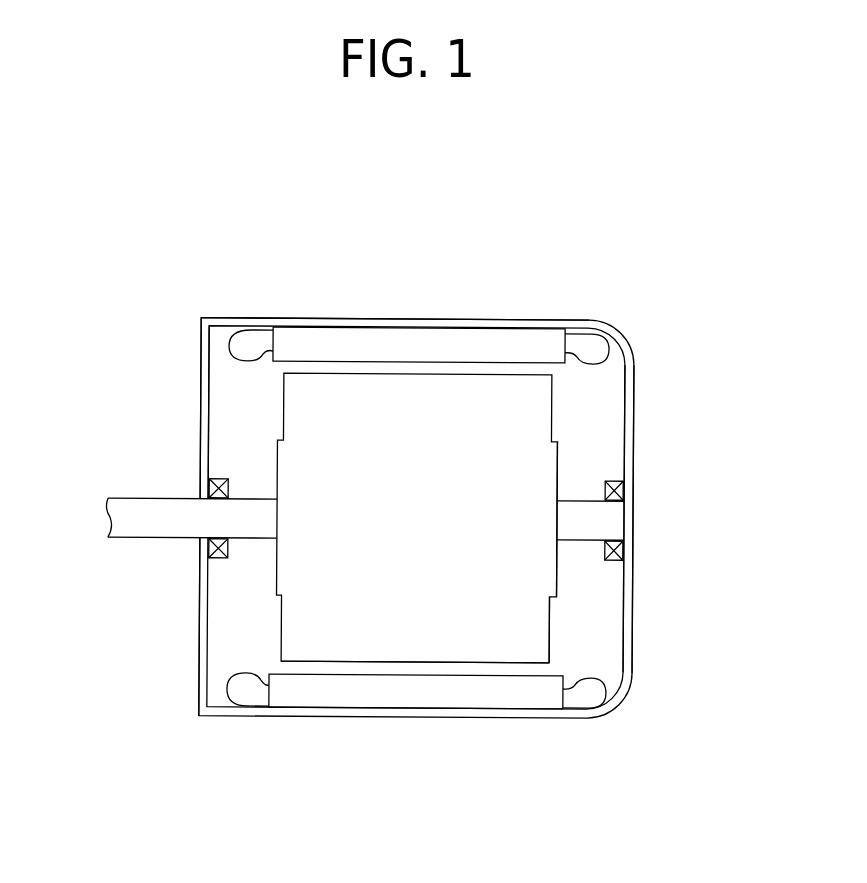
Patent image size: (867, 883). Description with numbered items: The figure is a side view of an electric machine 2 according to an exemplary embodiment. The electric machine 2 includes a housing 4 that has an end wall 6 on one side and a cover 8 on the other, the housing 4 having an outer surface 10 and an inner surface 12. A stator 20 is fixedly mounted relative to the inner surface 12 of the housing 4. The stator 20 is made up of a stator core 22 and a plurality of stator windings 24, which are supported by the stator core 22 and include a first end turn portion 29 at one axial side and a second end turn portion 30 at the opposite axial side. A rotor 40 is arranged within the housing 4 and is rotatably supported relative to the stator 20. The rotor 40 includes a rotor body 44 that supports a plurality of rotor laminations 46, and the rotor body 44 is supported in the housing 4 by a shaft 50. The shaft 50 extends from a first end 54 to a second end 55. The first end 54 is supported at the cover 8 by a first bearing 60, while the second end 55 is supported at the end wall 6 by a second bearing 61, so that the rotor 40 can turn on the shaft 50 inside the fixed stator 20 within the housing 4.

The electric machine 2 is at (191, 287).
The housing 4 is at (252, 305).
The end wall 6 is at (650, 497).
The cover 8 is at (185, 588).
The outer surface 10 is at (443, 319).
The inner surface 12 is at (632, 361).
The stator 20 is at (575, 376).
The stator core 22 is at (407, 358).
The plurality of stator windings 24 is at (229, 386).
The first end turn portion 29 is at (228, 348).
The second end turn portion 30 is at (588, 329).
The rotor 40 is at (589, 638).
The rotor body 44 is at (560, 582).
The plurality of rotor laminations 46 is at (419, 657).
The shaft 50 is at (114, 488).
The first end 54 is at (123, 532).
The second end 55 is at (618, 526).
The first bearing 60 is at (220, 561).
The second bearing 61 is at (615, 478).